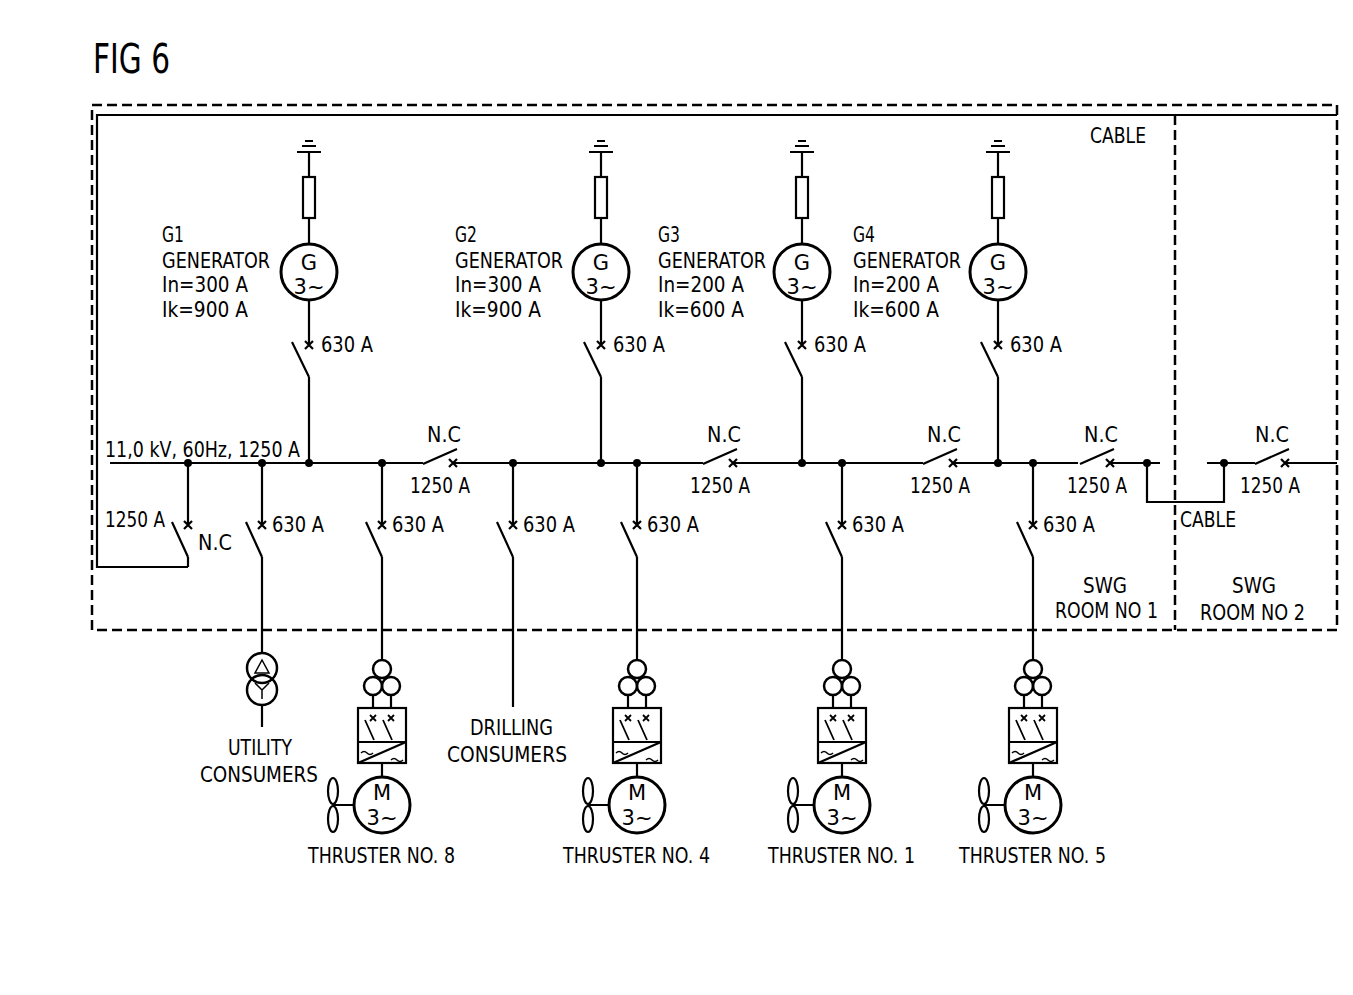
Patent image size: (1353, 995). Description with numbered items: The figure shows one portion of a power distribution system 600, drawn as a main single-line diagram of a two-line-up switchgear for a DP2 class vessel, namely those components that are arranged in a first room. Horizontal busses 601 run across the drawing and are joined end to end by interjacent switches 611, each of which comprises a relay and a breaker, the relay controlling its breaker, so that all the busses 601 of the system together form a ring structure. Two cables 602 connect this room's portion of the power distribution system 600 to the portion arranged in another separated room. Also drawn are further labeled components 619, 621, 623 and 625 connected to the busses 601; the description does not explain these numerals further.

The power distribution system 600 is at (1262, 758).
The bus 601 is at (333, 462).
The cable 602 is at (798, 115).
The switch 611 is at (462, 516).
The generator 619 is at (291, 253).
The generator circuit breaker 621 is at (591, 361).
The thruster motor 623 is at (410, 805).
The feeder circuit breaker 625 is at (627, 546).